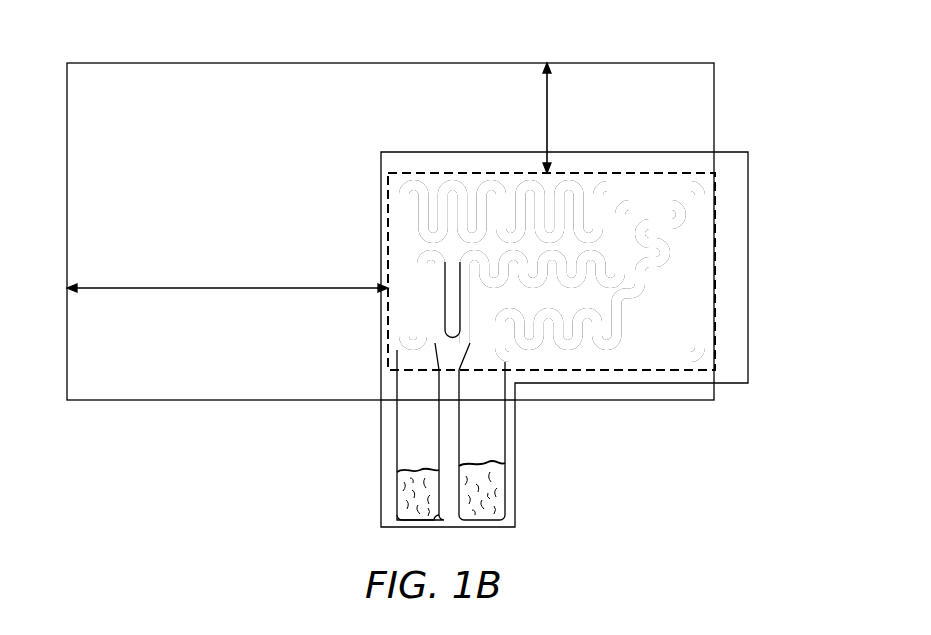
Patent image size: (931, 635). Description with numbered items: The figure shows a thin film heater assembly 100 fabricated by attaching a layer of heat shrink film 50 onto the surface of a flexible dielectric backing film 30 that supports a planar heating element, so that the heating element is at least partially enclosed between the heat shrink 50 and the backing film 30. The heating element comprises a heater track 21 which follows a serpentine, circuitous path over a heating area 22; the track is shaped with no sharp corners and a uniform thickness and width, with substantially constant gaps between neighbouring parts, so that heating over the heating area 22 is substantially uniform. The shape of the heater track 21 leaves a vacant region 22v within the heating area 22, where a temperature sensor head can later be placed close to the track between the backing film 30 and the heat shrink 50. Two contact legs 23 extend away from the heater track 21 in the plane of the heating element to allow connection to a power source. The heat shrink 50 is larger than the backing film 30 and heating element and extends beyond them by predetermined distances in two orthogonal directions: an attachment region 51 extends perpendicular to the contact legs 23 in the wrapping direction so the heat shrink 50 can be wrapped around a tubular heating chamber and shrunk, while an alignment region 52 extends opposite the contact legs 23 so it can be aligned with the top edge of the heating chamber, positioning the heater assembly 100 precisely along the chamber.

The heater assembly 100 is at (246, 487).
The heat shrink film 50 is at (162, 64).
The attachment region 51 is at (227, 274).
The alignment region 52 is at (561, 118).
The heating area 22 is at (386, 343).
The vacant region 22v is at (690, 325).
The heater track 21 is at (652, 356).
The contact legs 23 is at (406, 434).
The flexible dielectric backing film 30 is at (396, 516).